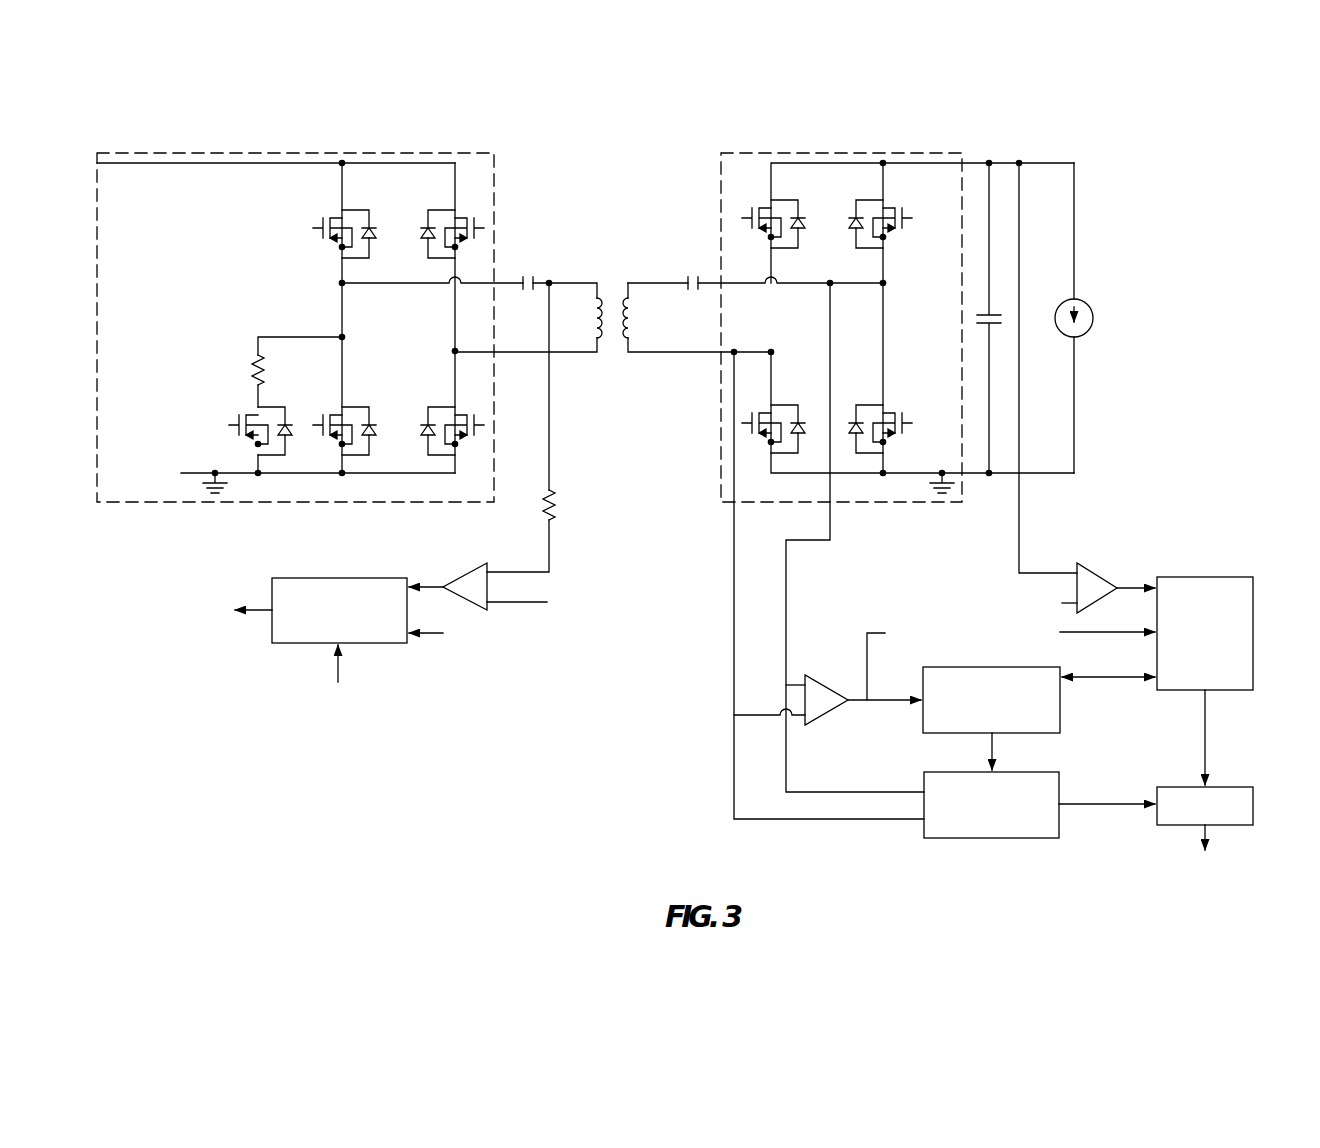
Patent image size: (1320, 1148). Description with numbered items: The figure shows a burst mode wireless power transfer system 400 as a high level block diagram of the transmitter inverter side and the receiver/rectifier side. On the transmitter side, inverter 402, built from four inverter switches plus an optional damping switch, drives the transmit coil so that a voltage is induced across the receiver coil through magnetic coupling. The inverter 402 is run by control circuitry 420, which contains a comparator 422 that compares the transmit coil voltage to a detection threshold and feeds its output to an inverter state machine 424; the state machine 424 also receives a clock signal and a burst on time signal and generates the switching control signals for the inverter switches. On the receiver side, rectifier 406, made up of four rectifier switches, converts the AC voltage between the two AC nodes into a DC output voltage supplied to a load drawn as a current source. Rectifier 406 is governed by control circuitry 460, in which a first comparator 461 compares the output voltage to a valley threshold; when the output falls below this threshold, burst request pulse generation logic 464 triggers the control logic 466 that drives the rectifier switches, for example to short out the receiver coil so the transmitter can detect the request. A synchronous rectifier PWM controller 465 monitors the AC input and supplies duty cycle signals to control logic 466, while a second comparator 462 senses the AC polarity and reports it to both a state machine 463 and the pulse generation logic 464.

The burst mode wireless power transfer system 400 is at (1107, 112).
The inverter 402 is at (467, 153).
The rectifier 406 is at (925, 153).
The control circuitry 420 is at (460, 712).
The comparator 422 is at (467, 567).
The inverter state machine 424 is at (340, 578).
The control circuitry 460 is at (1127, 511).
The first comparator 461 is at (1103, 575).
The second comparator 462 is at (828, 720).
The state machine 463 is at (1060, 700).
The burst request pulse generation logic 464 is at (1205, 577).
The synchronous rectifier PWM controller 465 is at (990, 838).
The control logic 466 is at (1253, 805).